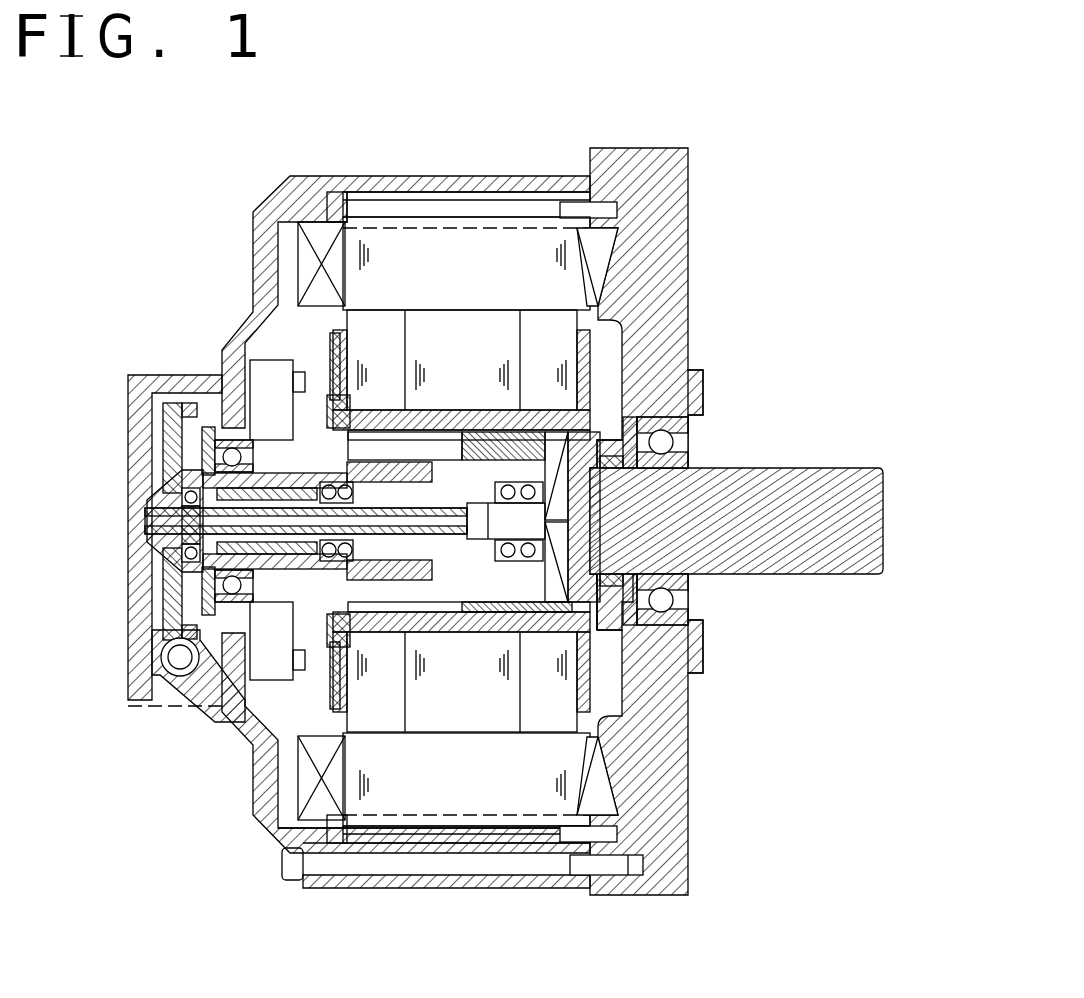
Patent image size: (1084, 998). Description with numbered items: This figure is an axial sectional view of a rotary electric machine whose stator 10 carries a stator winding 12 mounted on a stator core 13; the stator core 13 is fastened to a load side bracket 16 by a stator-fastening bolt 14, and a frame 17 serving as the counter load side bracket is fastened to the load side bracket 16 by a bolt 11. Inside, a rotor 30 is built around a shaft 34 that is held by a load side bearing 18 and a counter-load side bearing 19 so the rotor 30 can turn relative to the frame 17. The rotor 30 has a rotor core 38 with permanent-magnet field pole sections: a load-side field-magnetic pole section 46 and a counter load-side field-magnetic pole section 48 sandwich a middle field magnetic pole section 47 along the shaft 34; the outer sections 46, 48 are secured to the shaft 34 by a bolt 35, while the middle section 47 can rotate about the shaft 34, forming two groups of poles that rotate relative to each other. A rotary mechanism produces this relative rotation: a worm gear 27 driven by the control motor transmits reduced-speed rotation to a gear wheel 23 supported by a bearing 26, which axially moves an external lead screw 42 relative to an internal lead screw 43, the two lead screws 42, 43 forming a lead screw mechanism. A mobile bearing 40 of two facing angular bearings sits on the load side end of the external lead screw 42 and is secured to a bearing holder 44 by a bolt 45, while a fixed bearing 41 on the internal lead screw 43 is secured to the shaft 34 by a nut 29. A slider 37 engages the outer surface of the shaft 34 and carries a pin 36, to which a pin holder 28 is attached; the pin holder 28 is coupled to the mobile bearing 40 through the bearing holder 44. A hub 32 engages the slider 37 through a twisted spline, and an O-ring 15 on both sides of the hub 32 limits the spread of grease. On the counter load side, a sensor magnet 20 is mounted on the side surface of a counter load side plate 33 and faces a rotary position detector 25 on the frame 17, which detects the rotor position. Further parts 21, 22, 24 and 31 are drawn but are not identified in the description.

The stator 10 is at (655, 148).
The bolt 11 is at (318, 860).
The stator winding 12 is at (318, 250).
The stator core 13 is at (403, 247).
The stator-fastening bolt 14 is at (488, 203).
The O-ring 15 is at (597, 380).
The load side bracket 16 is at (655, 205).
The frame 17 is at (253, 323).
The load side bearing 18 is at (612, 435).
The counter-load side bearing 19 is at (182, 650).
The sensor magnet 20 is at (233, 343).
The spacer 21 is at (290, 250).
The end cover 22 is at (235, 440).
The gear wheel 23 is at (182, 600).
The end cap 24 is at (142, 515).
The rotary position detector 25 is at (220, 373).
The bearing 26 is at (180, 530).
The worm gear 27 is at (170, 672).
The pin holder 28 is at (600, 643).
The nut 29 is at (330, 537).
The rotor 30 is at (590, 333).
The carrier plate 31 is at (575, 705).
The hub 32 is at (600, 775).
The counter load side plate 33 is at (360, 578).
The shaft 34 is at (660, 540).
The bolt 35 is at (560, 640).
The pin 36 is at (592, 440).
The slider 37 is at (488, 445).
The rotor core 38 is at (487, 672).
The mobile bearing 40 is at (630, 390).
The fixed bearing 41 is at (250, 460).
The external lead screw 42 is at (590, 660).
The internal lead screw 43 is at (180, 575).
The bearing holder 44 is at (615, 455).
The bolt 45 is at (690, 462).
The load-side field-magnetic pole section 46 is at (522, 672).
The middle field magnetic pole section 47 is at (443, 680).
The counter load-side field-magnetic pole section 48 is at (386, 690).